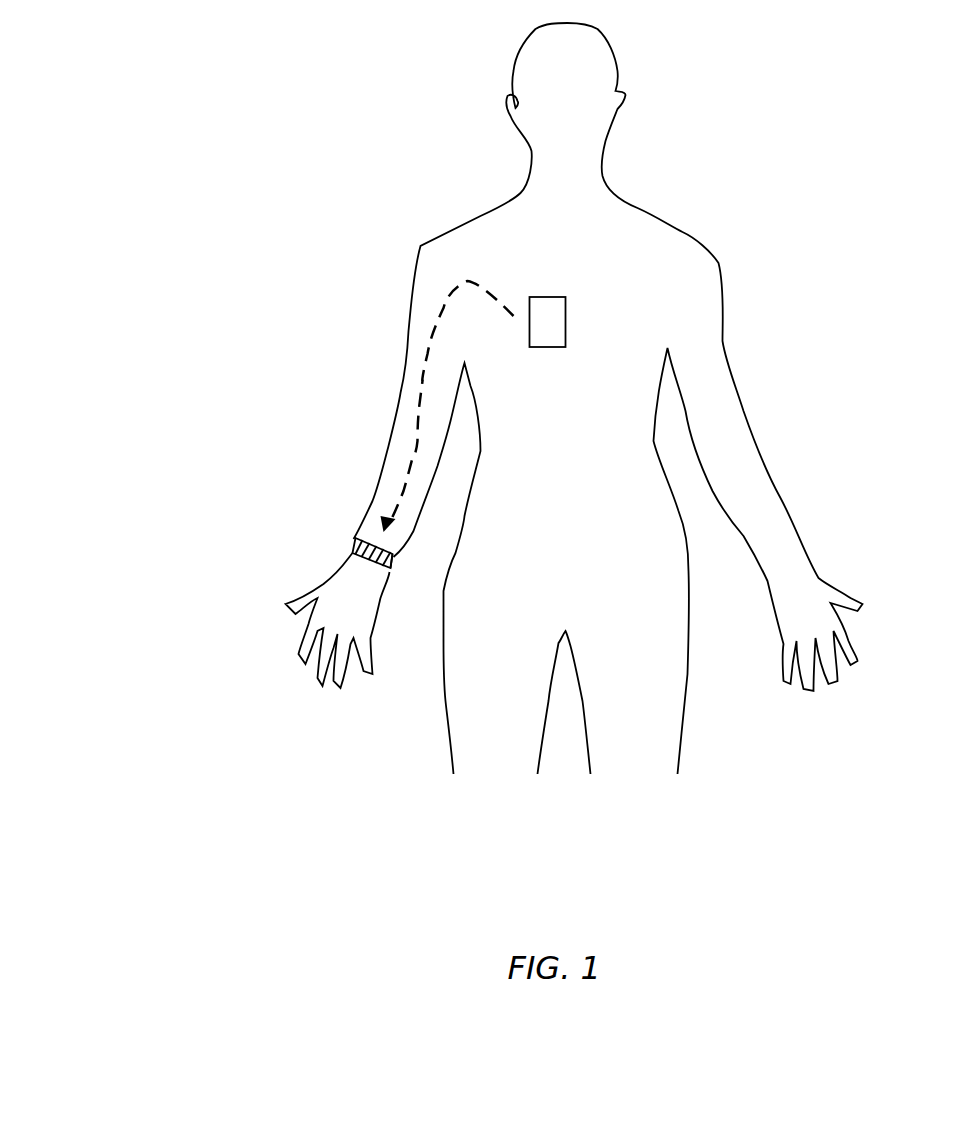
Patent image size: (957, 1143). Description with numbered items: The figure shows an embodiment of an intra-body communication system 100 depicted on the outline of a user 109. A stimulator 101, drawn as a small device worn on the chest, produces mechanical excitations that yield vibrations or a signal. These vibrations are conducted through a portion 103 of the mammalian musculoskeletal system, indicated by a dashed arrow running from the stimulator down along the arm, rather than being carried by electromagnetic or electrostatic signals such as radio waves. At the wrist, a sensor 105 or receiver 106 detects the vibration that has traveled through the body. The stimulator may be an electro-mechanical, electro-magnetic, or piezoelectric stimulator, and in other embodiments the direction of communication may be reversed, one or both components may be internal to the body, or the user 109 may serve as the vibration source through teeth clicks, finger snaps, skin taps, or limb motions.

The intra-body communication system 100 is at (268, 242).
The stimulator 101 is at (528, 308).
The portion of the mammalian musculoskeletal system 103 is at (400, 392).
The sensor 105 is at (352, 543).
The receiver 106 is at (389, 571).
The user 109 is at (580, 522).